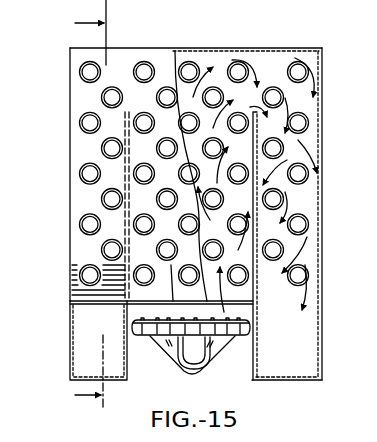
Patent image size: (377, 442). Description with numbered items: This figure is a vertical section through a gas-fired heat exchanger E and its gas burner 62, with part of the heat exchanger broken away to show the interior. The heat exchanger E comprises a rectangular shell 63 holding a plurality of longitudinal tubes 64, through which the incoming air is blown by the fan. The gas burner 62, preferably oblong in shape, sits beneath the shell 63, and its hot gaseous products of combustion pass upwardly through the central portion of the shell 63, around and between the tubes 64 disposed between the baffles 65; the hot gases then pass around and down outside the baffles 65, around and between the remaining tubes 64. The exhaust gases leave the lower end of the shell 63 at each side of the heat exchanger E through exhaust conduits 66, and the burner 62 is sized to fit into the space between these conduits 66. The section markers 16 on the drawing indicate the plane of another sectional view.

The gas burner 62 is at (211, 348).
The rectangular shell 63 is at (322, 107).
The longitudinal tubes 64 is at (194, 63).
The baffles 65 is at (132, 210).
The exhaust conduits 66 is at (70, 331).
The heat exchanger E is at (69, 120).
The section line 16- 16 is at (89, 208).